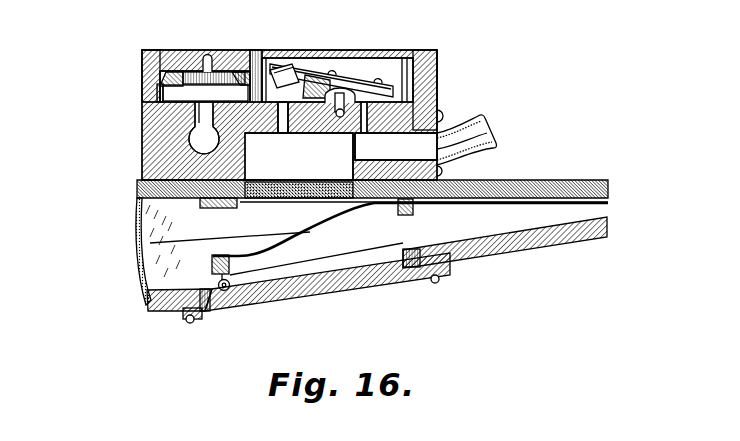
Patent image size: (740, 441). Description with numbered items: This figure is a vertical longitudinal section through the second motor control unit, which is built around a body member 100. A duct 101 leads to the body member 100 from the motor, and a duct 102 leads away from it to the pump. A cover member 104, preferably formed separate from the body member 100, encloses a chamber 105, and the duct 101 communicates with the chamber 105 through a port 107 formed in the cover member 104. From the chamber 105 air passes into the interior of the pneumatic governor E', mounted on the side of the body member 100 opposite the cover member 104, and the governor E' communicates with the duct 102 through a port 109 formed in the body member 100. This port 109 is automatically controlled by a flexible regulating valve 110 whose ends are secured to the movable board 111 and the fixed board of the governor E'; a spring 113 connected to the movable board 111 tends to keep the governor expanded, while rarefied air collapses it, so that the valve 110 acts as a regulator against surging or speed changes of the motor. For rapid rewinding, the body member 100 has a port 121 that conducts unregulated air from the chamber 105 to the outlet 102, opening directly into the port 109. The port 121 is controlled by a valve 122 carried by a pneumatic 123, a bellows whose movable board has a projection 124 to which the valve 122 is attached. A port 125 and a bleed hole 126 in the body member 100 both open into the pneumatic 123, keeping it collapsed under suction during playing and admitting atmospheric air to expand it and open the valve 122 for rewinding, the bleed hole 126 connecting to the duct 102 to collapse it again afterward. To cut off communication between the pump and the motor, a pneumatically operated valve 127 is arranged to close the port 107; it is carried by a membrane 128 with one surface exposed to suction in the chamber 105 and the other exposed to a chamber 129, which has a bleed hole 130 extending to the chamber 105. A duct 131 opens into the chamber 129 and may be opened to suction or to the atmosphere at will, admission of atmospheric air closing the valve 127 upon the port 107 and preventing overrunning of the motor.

The body member 100 is at (152, 148).
The duct 101 is at (203, 137).
The duct 102 is at (486, 137).
The cover member 104 is at (438, 68).
The chamber 105 is at (423, 57).
The port 107 is at (203, 115).
The port 109 is at (299, 165).
The flexible regulating valve 110 is at (327, 220).
The movable board 111 is at (368, 290).
The spring 113 is at (549, 185).
The port 121 is at (285, 132).
The valve 122 is at (291, 78).
The pneumatic 123 is at (357, 92).
The projection 124 is at (318, 72).
The port 125 is at (440, 96).
The bleed hole 126 is at (366, 132).
The pneumatically operated valve 127 is at (193, 72).
The membrane 128 is at (180, 74).
The chamber 129 is at (161, 75).
The bleed hole 130 is at (254, 72).
The duct 131 is at (212, 68).
The pneumatic governor E' is at (505, 252).